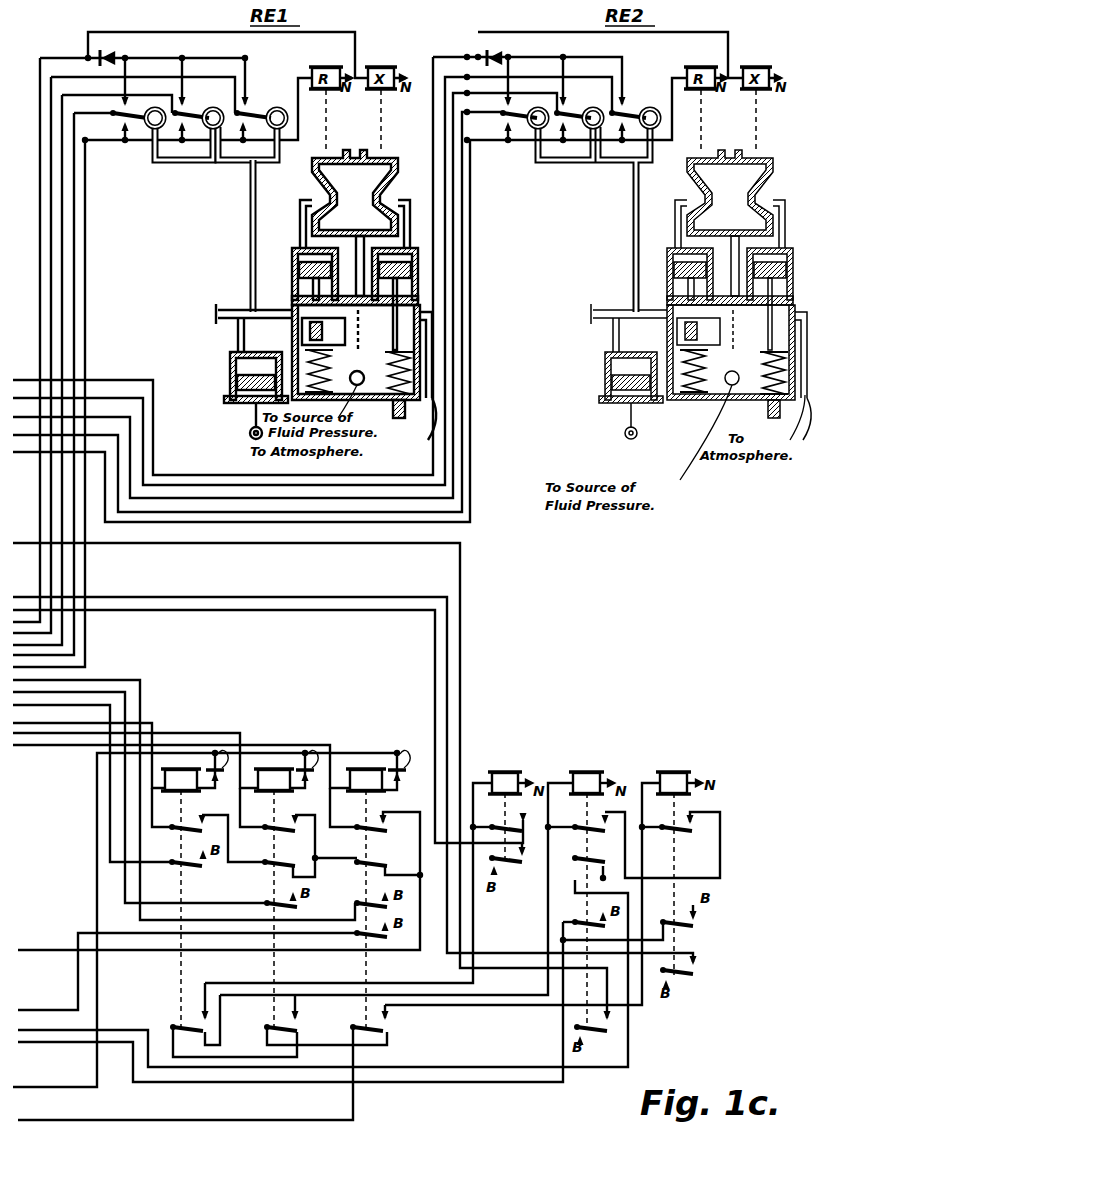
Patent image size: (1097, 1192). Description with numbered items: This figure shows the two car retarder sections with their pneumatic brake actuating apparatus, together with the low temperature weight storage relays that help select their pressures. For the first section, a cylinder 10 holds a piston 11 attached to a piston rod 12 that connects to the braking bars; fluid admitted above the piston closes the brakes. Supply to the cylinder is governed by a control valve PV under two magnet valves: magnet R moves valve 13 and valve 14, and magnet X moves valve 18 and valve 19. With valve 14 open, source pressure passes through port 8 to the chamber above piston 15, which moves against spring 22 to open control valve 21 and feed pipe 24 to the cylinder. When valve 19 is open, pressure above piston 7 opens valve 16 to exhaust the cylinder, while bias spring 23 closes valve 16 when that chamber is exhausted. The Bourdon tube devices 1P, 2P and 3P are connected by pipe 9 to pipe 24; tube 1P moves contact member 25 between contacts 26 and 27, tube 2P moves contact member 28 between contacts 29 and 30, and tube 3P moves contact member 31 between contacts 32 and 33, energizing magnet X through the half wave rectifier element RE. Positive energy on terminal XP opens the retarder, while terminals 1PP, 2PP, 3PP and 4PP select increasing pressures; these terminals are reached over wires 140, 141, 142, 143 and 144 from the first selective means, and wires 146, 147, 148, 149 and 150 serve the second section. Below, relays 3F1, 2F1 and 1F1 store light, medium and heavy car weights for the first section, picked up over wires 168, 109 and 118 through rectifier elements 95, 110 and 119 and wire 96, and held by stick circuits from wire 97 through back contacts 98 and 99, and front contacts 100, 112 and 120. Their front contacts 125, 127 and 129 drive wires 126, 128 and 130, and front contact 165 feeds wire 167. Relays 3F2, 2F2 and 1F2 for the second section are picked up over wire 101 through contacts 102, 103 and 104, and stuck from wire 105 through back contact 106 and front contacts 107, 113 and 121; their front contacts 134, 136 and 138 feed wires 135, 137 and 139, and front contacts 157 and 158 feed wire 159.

The terminal XP is at (78, 58).
The half wave rectifier element RE is at (110, 57).
The terminal 1PP is at (84, 77).
The terminal 2PP is at (78, 95).
The terminal 3PP is at (87, 103).
The terminal 4PP is at (193, 110).
The pressure responsive device 3P is at (131, 105).
The pressure responsive device 2P is at (192, 105).
The pressure responsive device 1P is at (258, 105).
The stationary contact 33 is at (120, 102).
The stationary contact 30 is at (178, 102).
The stationary contact 27 is at (248, 100).
The contact member 31 is at (121, 135).
The contact member 28 is at (177, 136).
The contact member 25 is at (240, 136).
The stationary contact 32 is at (125, 132).
The stationary contact 29 is at (184, 145).
The stationary contact 26 is at (247, 145).
The pipe 9 is at (249, 258).
The wire 140 is at (40, 128).
The wire 141 is at (50, 155).
The wire 142 is at (62, 170).
The wire 143 is at (76, 175).
The wire 144 is at (86, 200).
The valve 13 is at (320, 168).
The valve 18 is at (392, 168).
The valve 14 is at (300, 210).
The valve 19 is at (405, 215).
The piston 15 is at (293, 250).
The piston 7 is at (414, 252).
The control valve PV is at (298, 268).
The port 8 is at (357, 270).
The pipe 24 is at (270, 316).
The valve 16 is at (398, 350).
The control valve 21 is at (320, 346).
The spring 22 is at (359, 372).
The cylinder 10 is at (232, 362).
The piston 11 is at (240, 378).
The piston rod 12 is at (252, 410).
The bias spring 23 is at (403, 412).
The wire 146 is at (221, 266).
The wire 147 is at (311, 281).
The wire 148 is at (283, 295).
The wire 149 is at (256, 312).
The wire 150 is at (348, 300).
The wire 139 is at (312, 772).
The wire 137 is at (355, 772).
The wire 135 is at (270, 719).
The wire 130 is at (118, 680).
The wire 128 is at (128, 692).
The wire 168 is at (92, 783).
The wire 126 is at (100, 708).
The wire 109 is at (26, 738).
The wire 118 is at (76, 748).
The wire 96 is at (205, 920).
The relay 3F1 is at (179, 895).
The relay 2F1 is at (272, 895).
The relay 1F1 is at (364, 895).
The rectifier element 95 is at (216, 781).
The rectifier element 110 is at (308, 781).
The rectifier element 119 is at (410, 773).
The front contact 100 is at (205, 825).
The front contact 125 is at (180, 866).
The front contact 112 is at (296, 832).
The back contact 99 is at (268, 870).
The front contact 127 is at (292, 906).
The front contact 120 is at (352, 820).
The wire 97 is at (220, 881).
The back contact 98 is at (382, 868).
The front contact 129 is at (356, 905).
The front contact 165 is at (380, 938).
The wire 167 is at (187, 971).
The front contact 104 is at (180, 1022).
The contact 103 is at (275, 1022).
The contact 102 is at (360, 1022).
The wire 101 is at (185, 1073).
The wire 105 is at (323, 973).
The wire 159 is at (62, 1030).
The relay 3F2 is at (505, 806).
The relay 2F2 is at (586, 890).
The relay 1F2 is at (677, 864).
The front contact 107 is at (496, 818).
The front contact 134 is at (518, 872).
The front contact 113 is at (632, 842).
The back contact 106 is at (580, 860).
The front contact 157 is at (580, 913).
The front contact 158 is at (694, 926).
The front contact 138 is at (695, 972).
The front contact 136 is at (600, 1034).
The front contact 121 is at (665, 818).